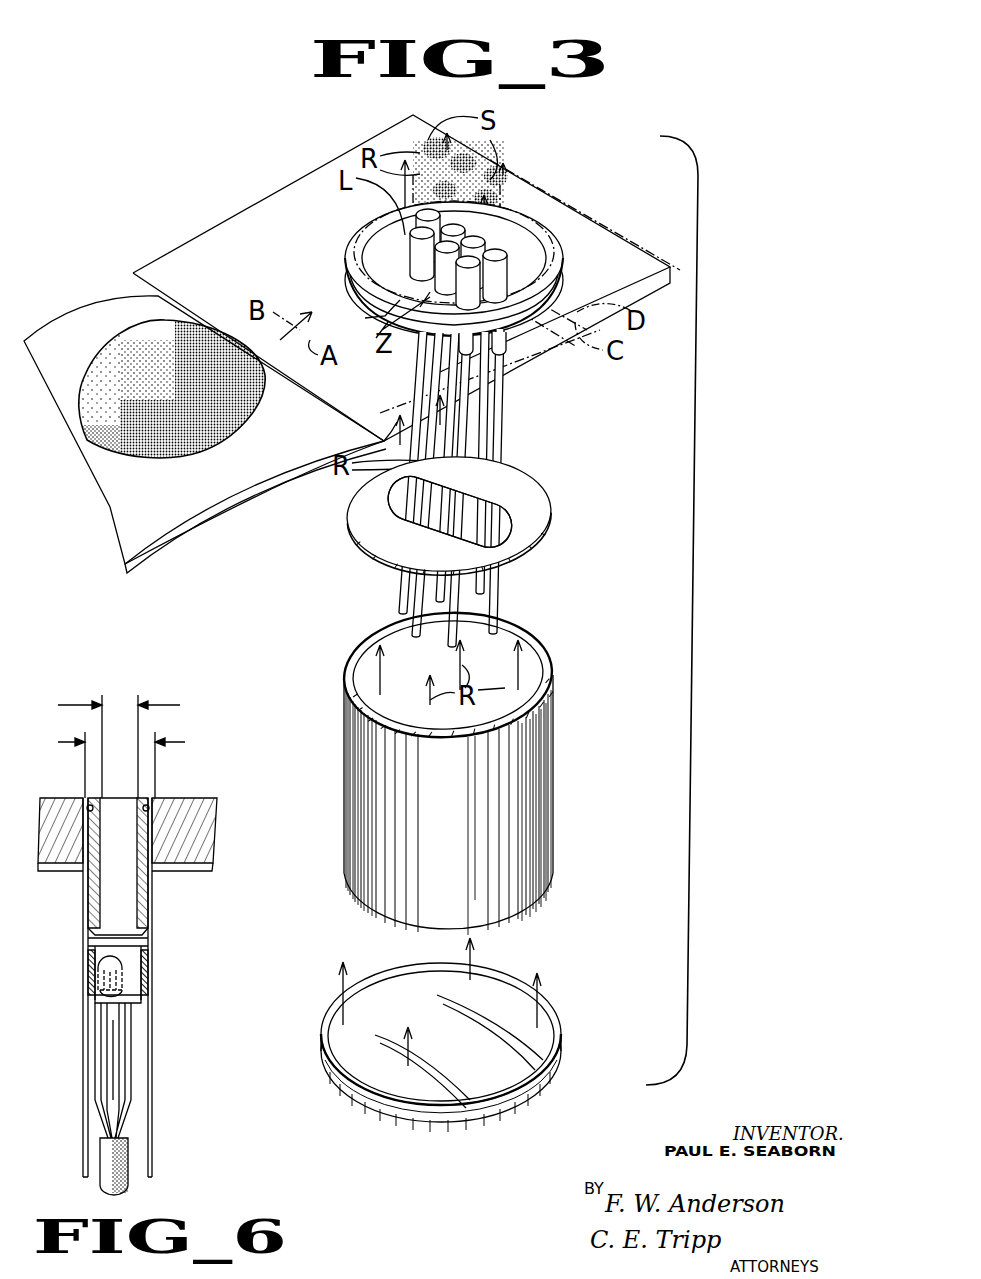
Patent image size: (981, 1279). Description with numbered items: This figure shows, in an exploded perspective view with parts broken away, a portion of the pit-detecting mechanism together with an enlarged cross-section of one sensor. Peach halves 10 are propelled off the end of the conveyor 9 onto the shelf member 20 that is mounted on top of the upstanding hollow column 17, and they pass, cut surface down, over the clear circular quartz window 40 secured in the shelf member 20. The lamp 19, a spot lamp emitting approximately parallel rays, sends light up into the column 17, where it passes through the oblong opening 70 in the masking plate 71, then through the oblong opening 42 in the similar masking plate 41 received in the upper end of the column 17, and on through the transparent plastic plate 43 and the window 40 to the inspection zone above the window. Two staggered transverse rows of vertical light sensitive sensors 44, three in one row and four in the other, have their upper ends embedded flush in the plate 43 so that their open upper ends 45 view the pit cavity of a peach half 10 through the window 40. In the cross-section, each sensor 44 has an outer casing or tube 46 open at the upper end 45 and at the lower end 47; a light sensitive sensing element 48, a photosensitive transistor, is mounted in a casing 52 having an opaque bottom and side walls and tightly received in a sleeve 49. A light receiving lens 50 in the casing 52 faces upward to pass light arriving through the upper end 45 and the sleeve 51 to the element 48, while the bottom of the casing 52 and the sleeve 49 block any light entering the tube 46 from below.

In FIG. 3, the conveyor 9 is at (115, 513).
In FIG. 3, the peach half 10 is at (130, 352).
In FIG. 3, the column 17 is at (546, 792).
In FIG. 3, the lamp 19 is at (552, 1020).
In FIG. 3, the shelf member 20 is at (236, 193).
In FIG. 3, the quartz window 40 is at (540, 200).
In FIG. 3, the masking plate 41 is at (365, 318).
In FIG. 3, the oblong opening 42 is at (400, 290).
In FIG. 3, the plastic plate 43 is at (517, 240).
In FIG. 6, the plastic plate 43 is at (210, 822).
In FIG. 3, the light sensitive sensor 44 is at (405, 251).
In FIG. 6, the light sensitive sensor 44 is at (120, 945).
In FIG. 6, the open upper end 45 is at (130, 798).
In FIG. 6, the outer casing or tube 46 is at (150, 945).
In FIG. 6, the lower end 47 is at (140, 1180).
In FIG. 6, the light sensitive sensing element 48 is at (100, 988).
In FIG. 6, the sleeve 49 is at (150, 975).
In FIG. 6, the light receiving lens 50 is at (100, 958).
In FIG. 6, the sleeve 51 is at (140, 910).
In FIG. 6, the casing 52 is at (130, 992).
In FIG. 3, the oblong opening 70 is at (505, 525).
In FIG. 3, the masking plate 71 is at (477, 514).